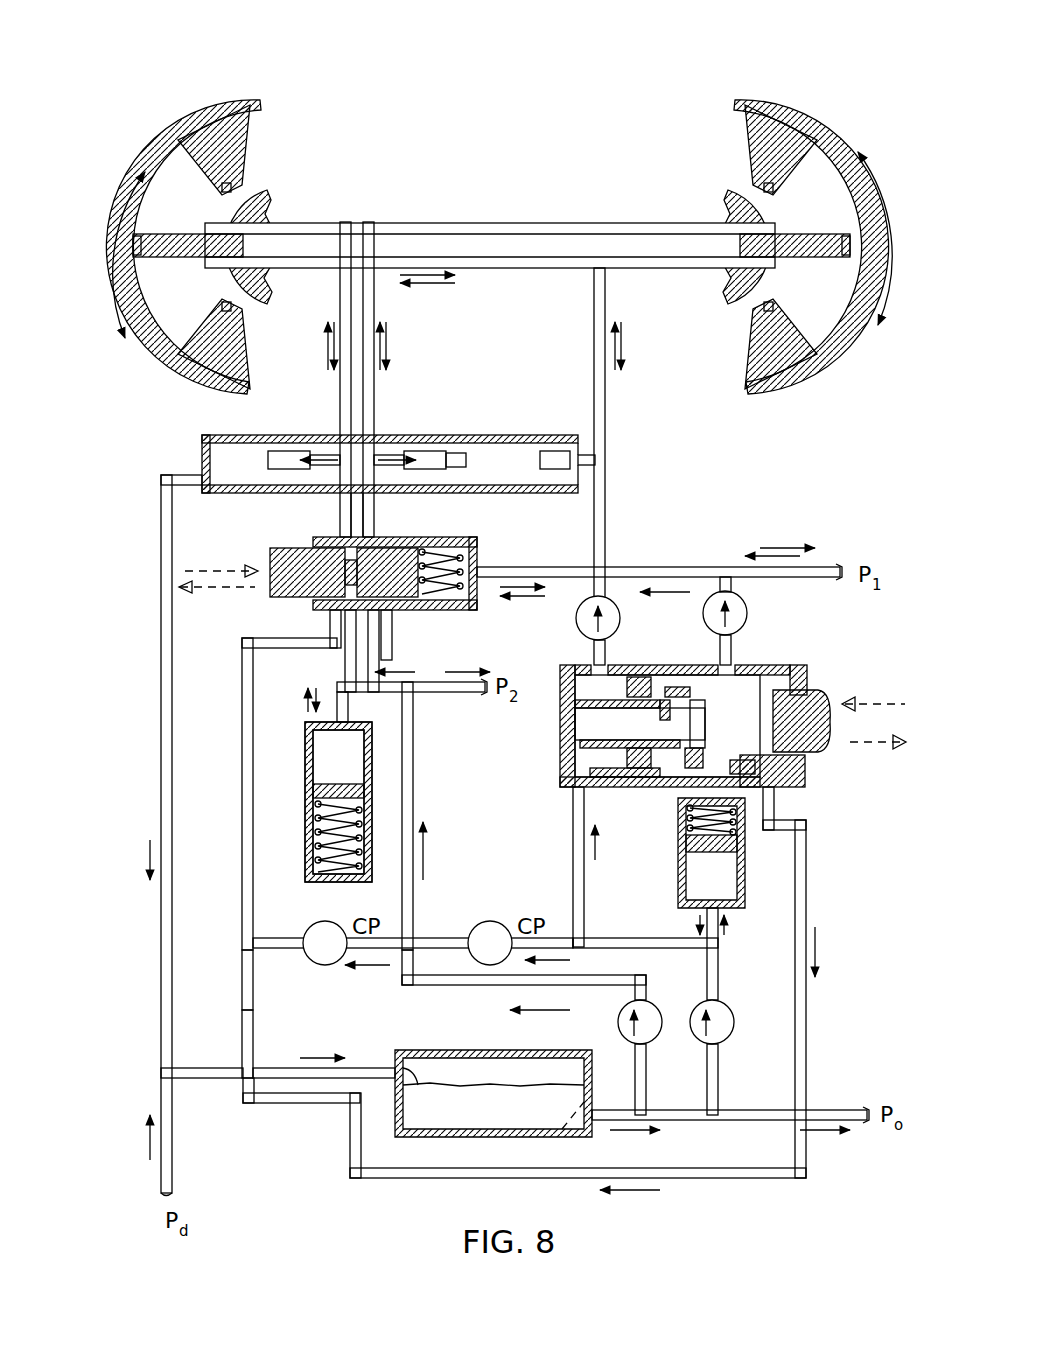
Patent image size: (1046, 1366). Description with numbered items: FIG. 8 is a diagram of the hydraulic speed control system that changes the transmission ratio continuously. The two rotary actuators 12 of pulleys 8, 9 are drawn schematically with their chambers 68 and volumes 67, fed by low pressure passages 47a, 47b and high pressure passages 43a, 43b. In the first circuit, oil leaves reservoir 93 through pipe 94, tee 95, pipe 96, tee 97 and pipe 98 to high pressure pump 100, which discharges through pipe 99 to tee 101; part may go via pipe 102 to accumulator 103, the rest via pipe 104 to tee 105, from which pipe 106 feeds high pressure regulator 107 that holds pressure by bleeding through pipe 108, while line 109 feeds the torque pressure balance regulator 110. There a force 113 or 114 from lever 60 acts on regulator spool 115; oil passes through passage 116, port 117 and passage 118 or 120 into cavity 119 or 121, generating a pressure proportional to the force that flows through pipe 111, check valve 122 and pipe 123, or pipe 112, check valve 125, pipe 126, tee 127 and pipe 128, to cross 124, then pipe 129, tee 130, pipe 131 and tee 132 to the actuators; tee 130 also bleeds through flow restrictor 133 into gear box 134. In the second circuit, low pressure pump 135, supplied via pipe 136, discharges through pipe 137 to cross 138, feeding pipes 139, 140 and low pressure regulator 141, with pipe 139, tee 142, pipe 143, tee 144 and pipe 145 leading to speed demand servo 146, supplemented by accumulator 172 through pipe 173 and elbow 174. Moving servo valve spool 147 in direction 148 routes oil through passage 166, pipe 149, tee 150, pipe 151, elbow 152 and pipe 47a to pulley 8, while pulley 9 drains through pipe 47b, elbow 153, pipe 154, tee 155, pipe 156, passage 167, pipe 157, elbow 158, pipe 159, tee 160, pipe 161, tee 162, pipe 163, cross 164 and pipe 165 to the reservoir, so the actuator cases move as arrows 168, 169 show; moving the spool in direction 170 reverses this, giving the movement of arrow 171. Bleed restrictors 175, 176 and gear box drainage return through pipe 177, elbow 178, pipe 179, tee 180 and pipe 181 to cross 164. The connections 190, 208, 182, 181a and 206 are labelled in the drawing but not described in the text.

The pulley 8 is at (197, 77).
The pulley 9 is at (797, 75).
The rotary actuator 12 is at (205, 125).
The rotary actuator chamber 68 is at (168, 165).
The volume 67 is at (175, 352).
The arrow 169 is at (106, 205).
The arrow 171 is at (114, 302).
The direction 170 is at (876, 190).
The arrow 168 is at (880, 280).
The low pressure oil passage 47a is at (292, 222).
The low pressure oil passage 47b is at (560, 222).
The high pressure oil passage 43a is at (398, 268).
The high pressure oil passage 43b is at (665, 270).
The elbow 152 is at (355, 222).
The elbow 153 is at (380, 222).
The pipe 151 is at (340, 300).
The pipe 154 is at (376, 390).
The pipe 131 is at (606, 392).
The tee 132 is at (594, 290).
The tee 130 is at (606, 458).
The pipe 129 is at (606, 500).
The bleed flow restrictor 176 is at (262, 436).
The tee 150 is at (340, 445).
The tee 155 is at (376, 440).
The bleed flow restrictor 175 is at (428, 440).
The gear box 134 is at (500, 437).
The flow restrictor 133 is at (526, 450).
The pipe 177 is at (203, 448).
The elbow 178 is at (160, 480).
The pipe 179 is at (160, 685).
The pipe 156 is at (380, 505).
The speed demand servo 146 is at (465, 537).
The servo valve passage 166 is at (285, 592).
The servo valve passage 167 is at (285, 555).
The direction 148 is at (268, 560).
The servo valve spool 147 is at (266, 536).
The pipe 149 is at (330, 536).
The cross 124 is at (603, 567).
The pressure line 190 is at (832, 567).
The pipe 128 is at (690, 567).
The tee 127 is at (726, 565).
The pipe 123 is at (606, 597).
The check valve 122 is at (576, 618).
The check valve 125 is at (748, 613).
The pipe 126 is at (733, 582).
The pipe 111 is at (606, 650).
The pipe 112 is at (733, 645).
The lever 60 is at (822, 785).
The cavity 121 is at (792, 665).
The force 113 is at (850, 700).
The force 114 is at (845, 742).
The regulator spool 115 is at (832, 770).
The passage 120 is at (640, 665).
The cavity 119 is at (572, 665).
The passage 116 is at (582, 712).
The port 117 is at (590, 732).
The torque pressure balance regulator 110 is at (577, 750).
The passage 118 is at (655, 780).
The tee 160 is at (332, 635).
The pipe 159 is at (345, 665).
The pipe 157 is at (382, 625).
The elbow 158 is at (393, 650).
The pipe 143 is at (395, 684).
The pipe 145 is at (350, 680).
The pressure port 208 is at (480, 682).
The tee 144 is at (360, 688).
The tee 142 is at (412, 692).
The pipe 173 is at (336, 710).
The accumulator 172 is at (306, 800).
The elbow 174 is at (352, 724).
The pipe 139 is at (413, 780).
The cross 138 is at (403, 925).
The pipe 161 is at (242, 745).
The tee 162 is at (242, 900).
The pipe 163 is at (243, 1000).
The cross 164 is at (243, 1045).
The pipe 140 is at (376, 960).
The low pressure regulator 141 is at (320, 921).
The high pressure regulator 107 is at (492, 920).
The pipe 108 is at (470, 938).
The pipe 106 is at (512, 925).
The line 109 is at (573, 825).
The tee 105 is at (583, 948).
The pipe 104 is at (650, 938).
The accumulator 103 is at (678, 830).
The tee 101 is at (720, 952).
The pipe 102 is at (718, 920).
The pipe 99 is at (720, 974).
The high pressure pump 100 is at (734, 1026).
The pipe 98 is at (720, 1068).
The tee 97 is at (720, 1105).
The low pressure pump 135 is at (616, 1022).
The pipe 137 is at (465, 987).
The pipe 136 is at (648, 1068).
The pipe 94 is at (597, 1110).
The tee 95 is at (648, 1108).
The pipe 96 is at (690, 1122).
The output pressure line 182 is at (826, 1110).
The reservoir 93 is at (480, 1050).
The pipe 165 is at (290, 1068).
The tee 180 is at (163, 1068).
The pipe 181 is at (243, 1090).
The return conduit 181a is at (580, 1170).
The drain pressure line 206 is at (172, 1160).